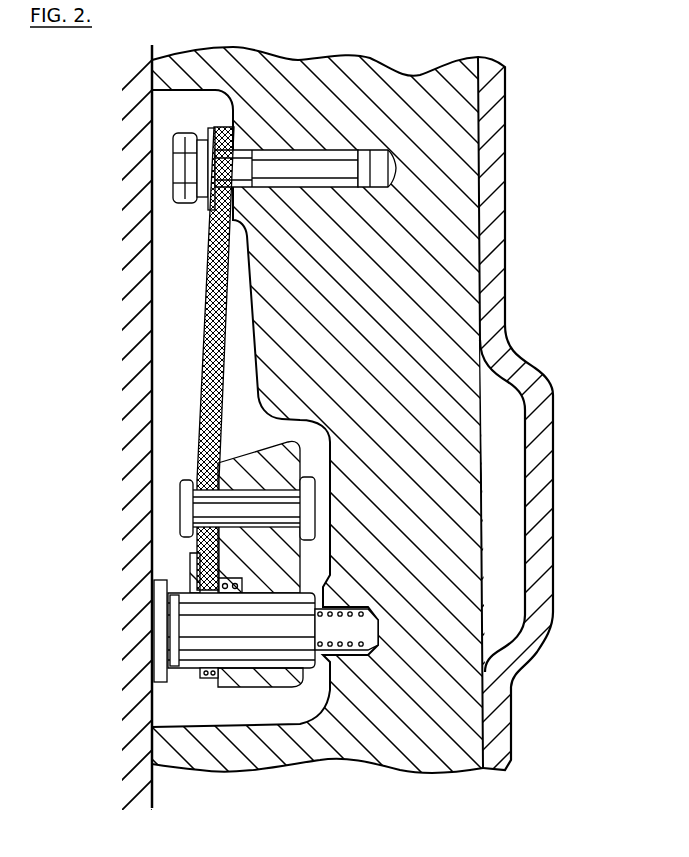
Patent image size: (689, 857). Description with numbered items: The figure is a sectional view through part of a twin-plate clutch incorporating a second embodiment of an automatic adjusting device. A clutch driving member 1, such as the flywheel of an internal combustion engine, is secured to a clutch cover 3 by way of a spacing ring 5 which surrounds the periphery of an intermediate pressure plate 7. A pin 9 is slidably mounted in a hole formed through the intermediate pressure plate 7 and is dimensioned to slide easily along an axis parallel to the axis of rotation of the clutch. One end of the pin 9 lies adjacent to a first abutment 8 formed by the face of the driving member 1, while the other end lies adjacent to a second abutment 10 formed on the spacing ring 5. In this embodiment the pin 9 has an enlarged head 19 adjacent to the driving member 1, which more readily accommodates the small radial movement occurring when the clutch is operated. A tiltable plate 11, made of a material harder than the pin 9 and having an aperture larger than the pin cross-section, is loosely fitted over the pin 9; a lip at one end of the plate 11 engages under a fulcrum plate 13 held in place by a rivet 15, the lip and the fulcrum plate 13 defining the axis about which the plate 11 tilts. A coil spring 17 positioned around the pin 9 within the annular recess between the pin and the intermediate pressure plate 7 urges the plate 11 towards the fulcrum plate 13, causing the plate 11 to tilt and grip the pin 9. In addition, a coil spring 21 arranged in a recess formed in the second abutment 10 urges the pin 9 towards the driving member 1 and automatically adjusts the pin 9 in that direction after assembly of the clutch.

The clutch driving member 1 is at (110, 440).
The clutch cover 3 is at (540, 549).
The spacing ring 5 is at (300, 44).
The intermediate pressure plate 7 is at (212, 674).
The first abutment 8 is at (198, 670).
The pin 9 is at (178, 670).
The second abutment 10 is at (322, 692).
The tiltable plate 11 is at (207, 577).
The fulcrum plate 13 is at (195, 553).
The rivet 15 is at (180, 500).
The coil spring 17 is at (222, 689).
The enlarged head 19 is at (155, 640).
The coil spring 21 is at (326, 700).